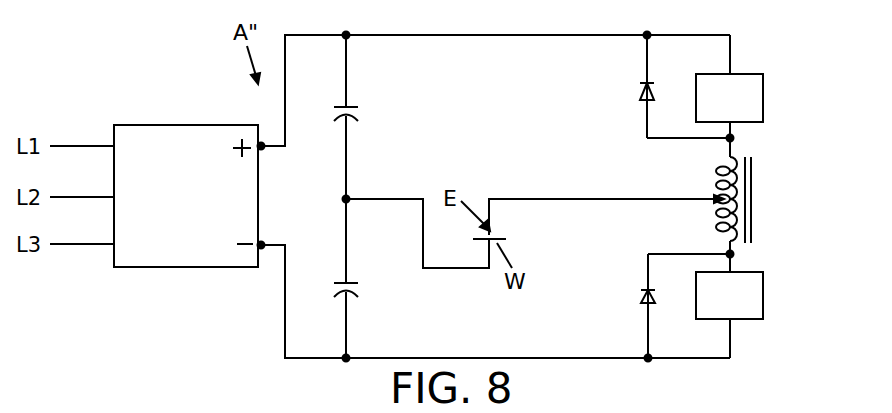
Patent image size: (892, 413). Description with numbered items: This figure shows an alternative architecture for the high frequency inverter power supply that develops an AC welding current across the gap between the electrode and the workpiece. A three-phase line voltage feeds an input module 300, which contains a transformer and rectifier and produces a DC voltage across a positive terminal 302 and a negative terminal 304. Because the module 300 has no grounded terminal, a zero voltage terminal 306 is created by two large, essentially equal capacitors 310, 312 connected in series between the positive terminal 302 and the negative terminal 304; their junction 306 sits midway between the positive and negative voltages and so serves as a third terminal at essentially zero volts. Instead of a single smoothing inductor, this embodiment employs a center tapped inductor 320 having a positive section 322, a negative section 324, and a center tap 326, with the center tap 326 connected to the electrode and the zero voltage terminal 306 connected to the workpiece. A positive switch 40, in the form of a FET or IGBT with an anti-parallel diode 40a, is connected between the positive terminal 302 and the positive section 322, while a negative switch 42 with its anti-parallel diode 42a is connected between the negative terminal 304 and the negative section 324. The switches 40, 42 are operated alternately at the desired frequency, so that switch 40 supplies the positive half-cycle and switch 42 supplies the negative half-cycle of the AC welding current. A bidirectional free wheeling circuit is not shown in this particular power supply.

The input module 300 is at (181, 125).
The positive terminal 302 is at (263, 149).
The negative terminal 304 is at (263, 243).
The zero voltage terminal 306 is at (347, 200).
The capacitor 310 is at (353, 107).
The capacitor 312 is at (358, 285).
The center tapped inductor 320 is at (707, 196).
The positive section 322 is at (717, 171).
The negative section 324 is at (716, 227).
The center tap 326 is at (716, 198).
The positive switch 40 is at (765, 93).
The anti-parallel diode 40a is at (640, 91).
The negative switch 42 is at (765, 294).
The anti-parallel diode 42a is at (640, 298).